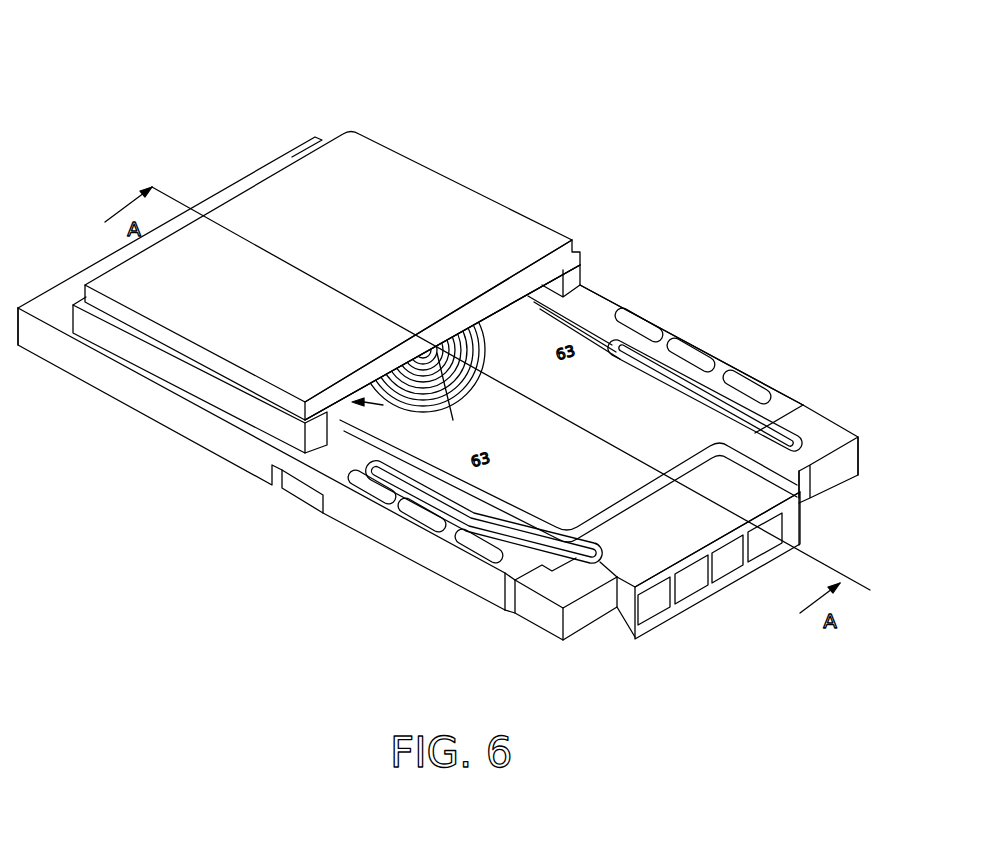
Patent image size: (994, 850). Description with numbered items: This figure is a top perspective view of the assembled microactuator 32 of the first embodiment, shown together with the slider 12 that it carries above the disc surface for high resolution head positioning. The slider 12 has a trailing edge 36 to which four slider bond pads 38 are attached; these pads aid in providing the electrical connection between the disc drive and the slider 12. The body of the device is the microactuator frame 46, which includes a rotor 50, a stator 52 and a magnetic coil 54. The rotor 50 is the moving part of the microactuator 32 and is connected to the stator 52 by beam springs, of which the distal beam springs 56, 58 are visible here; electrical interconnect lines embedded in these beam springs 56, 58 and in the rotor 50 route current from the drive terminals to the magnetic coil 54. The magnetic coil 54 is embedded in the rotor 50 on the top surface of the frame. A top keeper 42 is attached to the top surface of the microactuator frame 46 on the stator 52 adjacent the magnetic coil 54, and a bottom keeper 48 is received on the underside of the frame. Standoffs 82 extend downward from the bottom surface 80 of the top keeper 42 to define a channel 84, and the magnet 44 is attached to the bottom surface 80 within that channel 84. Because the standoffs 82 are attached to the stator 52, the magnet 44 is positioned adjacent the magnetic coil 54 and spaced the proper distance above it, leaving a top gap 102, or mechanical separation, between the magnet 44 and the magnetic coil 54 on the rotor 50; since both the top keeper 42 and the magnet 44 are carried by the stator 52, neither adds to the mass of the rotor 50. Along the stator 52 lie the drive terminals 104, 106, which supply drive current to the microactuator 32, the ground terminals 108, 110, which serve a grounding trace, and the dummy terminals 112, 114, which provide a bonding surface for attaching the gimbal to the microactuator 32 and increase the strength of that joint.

The slider 12 is at (700, 527).
The microactuator 32 is at (222, 82).
The trailing edge 36 is at (787, 532).
The slider bond pads 38 is at (688, 590).
The top keeper 42 is at (417, 203).
The magnet 44 is at (437, 353).
The microactuator frame 46 is at (120, 258).
The bottom keeper 48 is at (310, 495).
The rotor 50 is at (620, 402).
The stator 52 is at (616, 300).
The magnetic coil 54 is at (483, 360).
The beam spring 56 is at (520, 543).
The beam spring 58 is at (707, 380).
The bottom surface 80 is at (501, 305).
The standoffs 82 is at (287, 437).
The channel 84 is at (383, 392).
The top gap 102 is at (415, 383).
The drive terminal 104 is at (425, 515).
The drive terminal 106 is at (695, 360).
The ground terminal 108 is at (373, 488).
The ground terminal 110 is at (637, 325).
The dummy terminal 112 is at (480, 543).
The dummy terminal 114 is at (743, 387).